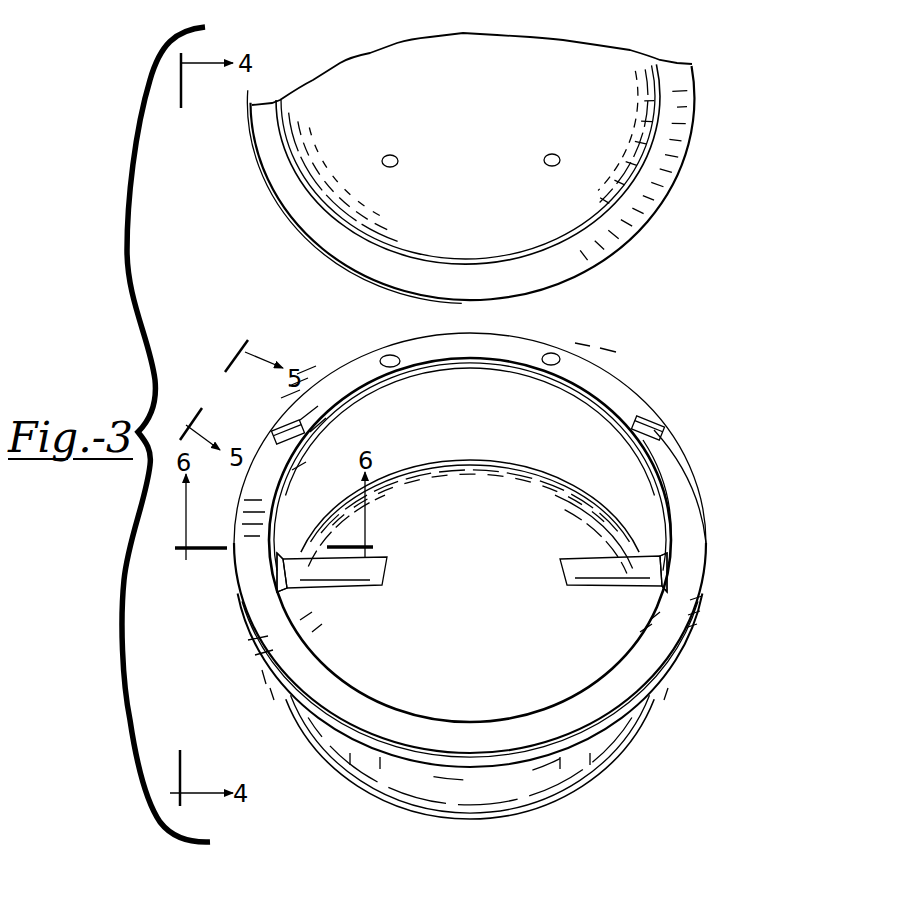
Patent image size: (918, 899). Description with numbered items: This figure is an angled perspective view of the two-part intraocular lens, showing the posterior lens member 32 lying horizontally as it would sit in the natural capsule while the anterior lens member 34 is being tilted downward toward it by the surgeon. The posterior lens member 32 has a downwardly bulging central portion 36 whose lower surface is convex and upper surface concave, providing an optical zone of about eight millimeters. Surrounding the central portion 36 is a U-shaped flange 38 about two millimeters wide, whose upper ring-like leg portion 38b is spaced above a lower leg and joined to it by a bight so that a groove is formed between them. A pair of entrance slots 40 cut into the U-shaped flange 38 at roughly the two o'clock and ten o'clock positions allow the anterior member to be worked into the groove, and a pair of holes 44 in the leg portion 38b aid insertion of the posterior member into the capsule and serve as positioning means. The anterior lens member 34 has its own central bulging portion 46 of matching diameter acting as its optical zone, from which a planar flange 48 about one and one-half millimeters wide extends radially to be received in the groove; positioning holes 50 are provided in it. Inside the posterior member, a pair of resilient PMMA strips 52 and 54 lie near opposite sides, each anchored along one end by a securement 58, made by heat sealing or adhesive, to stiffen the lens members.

The posterior lens member 32 is at (313, 759).
The anterior lens member 34 is at (682, 179).
The central portion 36 is at (533, 810).
The U-shaped flange 38 is at (710, 521).
The leg portion 38b is at (678, 481).
The entrance slot 40 is at (280, 424).
The hole 44 is at (385, 354).
The central bulging portion 46 is at (476, 72).
The planar flange 48 is at (278, 170).
The positioning hole 50 is at (388, 153).
The resilient strip 52 is at (378, 549).
The resilient strip 54 is at (558, 567).
The securement 58 is at (282, 557).